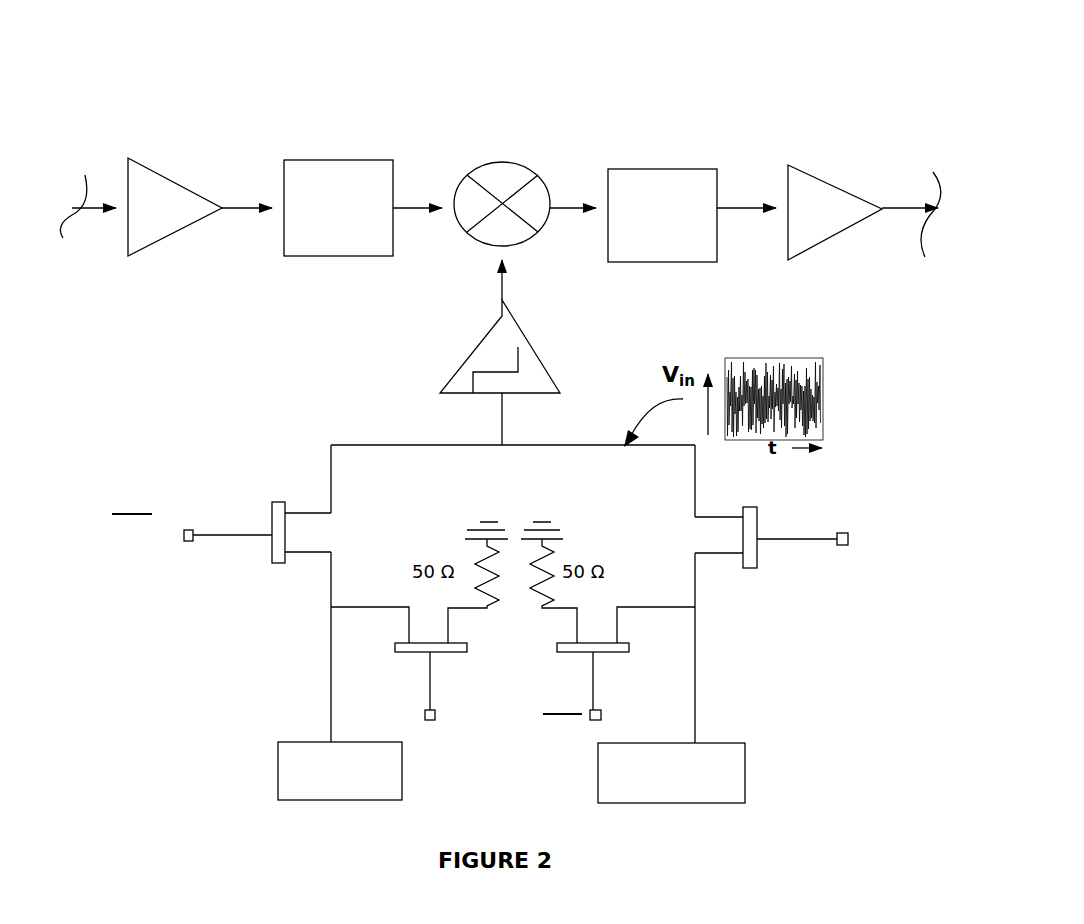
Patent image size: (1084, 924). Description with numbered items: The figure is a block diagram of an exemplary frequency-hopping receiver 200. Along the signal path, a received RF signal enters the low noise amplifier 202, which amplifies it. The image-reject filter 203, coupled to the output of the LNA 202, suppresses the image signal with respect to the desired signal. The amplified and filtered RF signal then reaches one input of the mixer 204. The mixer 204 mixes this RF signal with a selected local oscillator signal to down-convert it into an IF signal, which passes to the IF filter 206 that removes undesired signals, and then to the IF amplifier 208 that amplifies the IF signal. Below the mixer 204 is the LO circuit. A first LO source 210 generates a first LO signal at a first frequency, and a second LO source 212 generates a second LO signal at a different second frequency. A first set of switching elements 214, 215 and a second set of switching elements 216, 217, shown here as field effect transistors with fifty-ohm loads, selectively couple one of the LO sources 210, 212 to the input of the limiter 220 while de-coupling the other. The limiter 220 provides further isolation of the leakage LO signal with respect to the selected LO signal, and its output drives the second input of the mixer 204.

The frequency-hopping receiver 200 is at (660, 90).
The low noise amplifier (LNA) 202 is at (163, 175).
The image-reject filter 203 is at (337, 160).
The mixer 204 is at (502, 162).
The intermediate frequency (IF) filter 206 is at (650, 169).
The IF amplifier 208 is at (827, 180).
The first local oscillator (LO) source 210 is at (303, 742).
The second LO source 212 is at (730, 743).
The first set of switching elements 214 is at (278, 495).
The first set of switching elements 215 is at (453, 653).
The second set of switching elements 216 is at (758, 518).
The second set of switching elements 217 is at (617, 653).
The limiter 220 is at (467, 353).